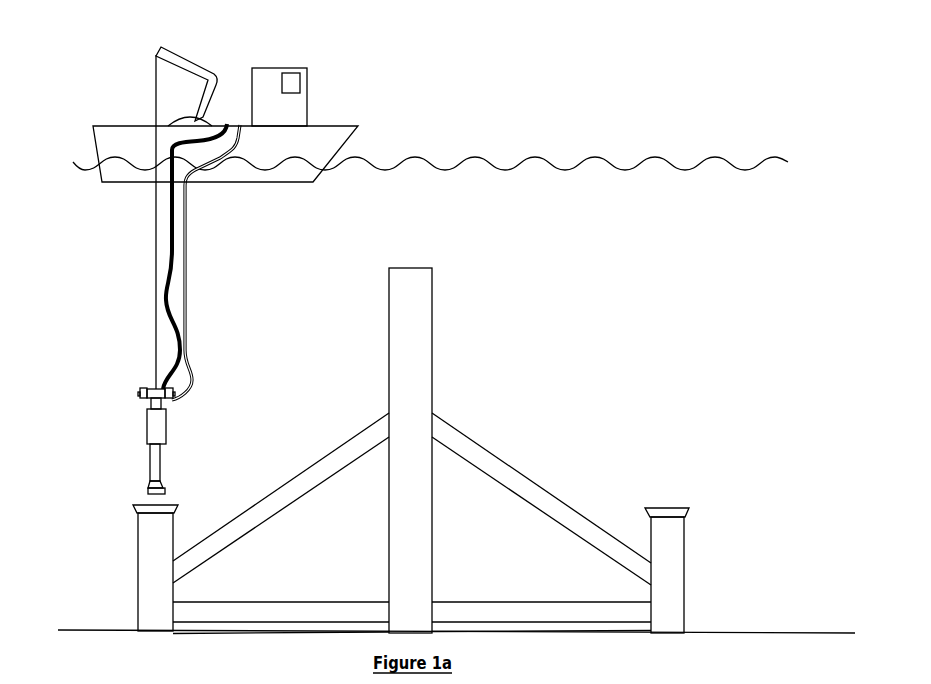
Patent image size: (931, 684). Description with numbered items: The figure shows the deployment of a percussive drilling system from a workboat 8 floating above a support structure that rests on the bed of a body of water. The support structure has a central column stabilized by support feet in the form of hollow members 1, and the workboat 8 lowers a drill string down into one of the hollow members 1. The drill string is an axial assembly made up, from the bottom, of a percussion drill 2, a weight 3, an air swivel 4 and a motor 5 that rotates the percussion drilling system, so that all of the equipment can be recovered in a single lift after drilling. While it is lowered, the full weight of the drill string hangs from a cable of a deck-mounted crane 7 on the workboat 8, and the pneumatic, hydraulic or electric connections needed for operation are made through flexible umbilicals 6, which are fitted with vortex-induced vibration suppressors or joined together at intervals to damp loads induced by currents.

The hollow member 1 is at (150, 543).
The percussion drill 2 is at (155, 465).
The weight 3 is at (160, 433).
The air swivel 4 is at (138, 390).
The motor 5 is at (155, 388).
The umbilicals 6 is at (170, 277).
The crane 7 is at (205, 72).
The workboat 8 is at (122, 132).